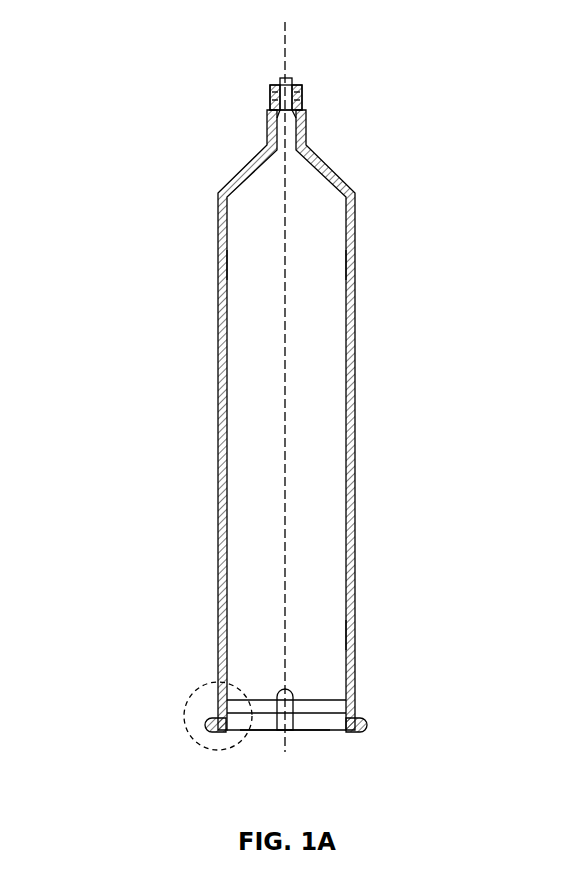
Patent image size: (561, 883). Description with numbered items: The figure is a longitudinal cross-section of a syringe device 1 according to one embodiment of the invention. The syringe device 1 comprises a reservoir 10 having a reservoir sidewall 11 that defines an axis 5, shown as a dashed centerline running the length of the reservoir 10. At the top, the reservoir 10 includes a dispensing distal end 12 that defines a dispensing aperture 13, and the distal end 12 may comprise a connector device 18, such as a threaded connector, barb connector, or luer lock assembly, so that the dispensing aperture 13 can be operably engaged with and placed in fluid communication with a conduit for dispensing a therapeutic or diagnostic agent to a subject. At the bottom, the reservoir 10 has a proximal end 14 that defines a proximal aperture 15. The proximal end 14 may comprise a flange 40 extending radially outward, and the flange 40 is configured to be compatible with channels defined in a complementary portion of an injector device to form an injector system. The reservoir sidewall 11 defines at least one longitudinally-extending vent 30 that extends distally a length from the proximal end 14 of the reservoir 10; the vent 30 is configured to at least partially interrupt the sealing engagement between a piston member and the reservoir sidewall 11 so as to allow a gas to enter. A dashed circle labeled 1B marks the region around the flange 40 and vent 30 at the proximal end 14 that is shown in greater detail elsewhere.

The syringe device 1 is at (116, 44).
The axis 5 is at (300, 42).
The reservoir 10 is at (372, 320).
The reservoir sidewall 11 is at (336, 266).
The dispensing distal end 12 is at (272, 90).
The dispensing aperture 13 is at (280, 77).
The connector device 18 is at (302, 93).
The proximal end 14 is at (372, 714).
The proximal aperture 15 is at (310, 742).
The vent 30 is at (287, 684).
The flange 40 is at (356, 727).
The detail view circle 1B is at (200, 683).